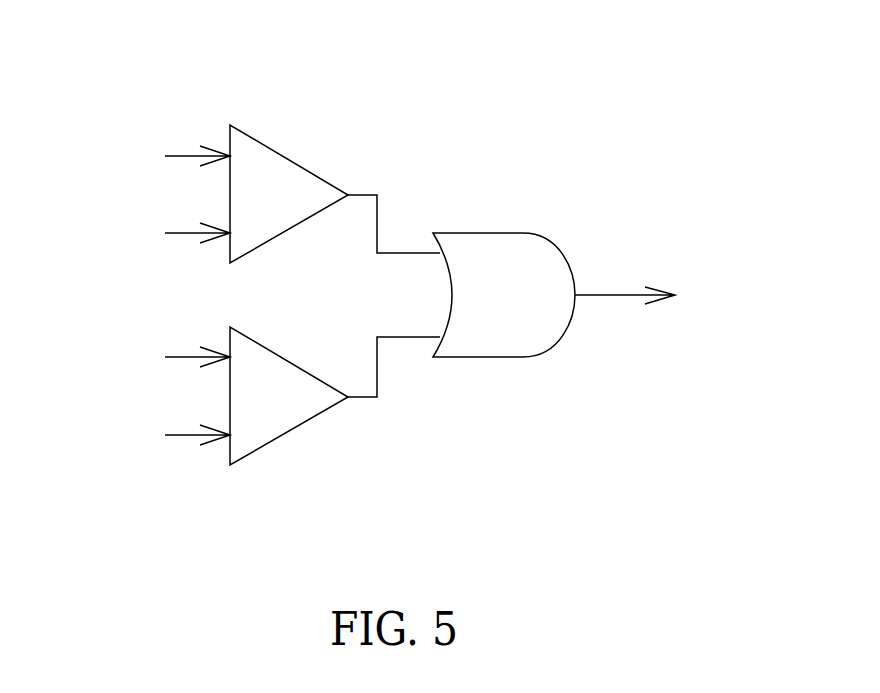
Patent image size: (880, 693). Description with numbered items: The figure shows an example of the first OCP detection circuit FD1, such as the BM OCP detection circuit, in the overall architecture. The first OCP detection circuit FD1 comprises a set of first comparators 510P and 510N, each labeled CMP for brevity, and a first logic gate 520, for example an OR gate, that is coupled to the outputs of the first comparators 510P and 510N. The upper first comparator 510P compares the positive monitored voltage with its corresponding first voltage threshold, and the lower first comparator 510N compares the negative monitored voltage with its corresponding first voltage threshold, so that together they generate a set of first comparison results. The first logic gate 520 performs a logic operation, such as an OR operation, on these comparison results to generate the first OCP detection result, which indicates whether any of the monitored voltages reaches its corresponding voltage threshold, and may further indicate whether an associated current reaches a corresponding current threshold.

The first comparator 510P is at (294, 157).
The first comparator 510N is at (290, 430).
The first logic gate 520 is at (530, 312).
The first OCP detection circuit FD1 is at (597, 110).